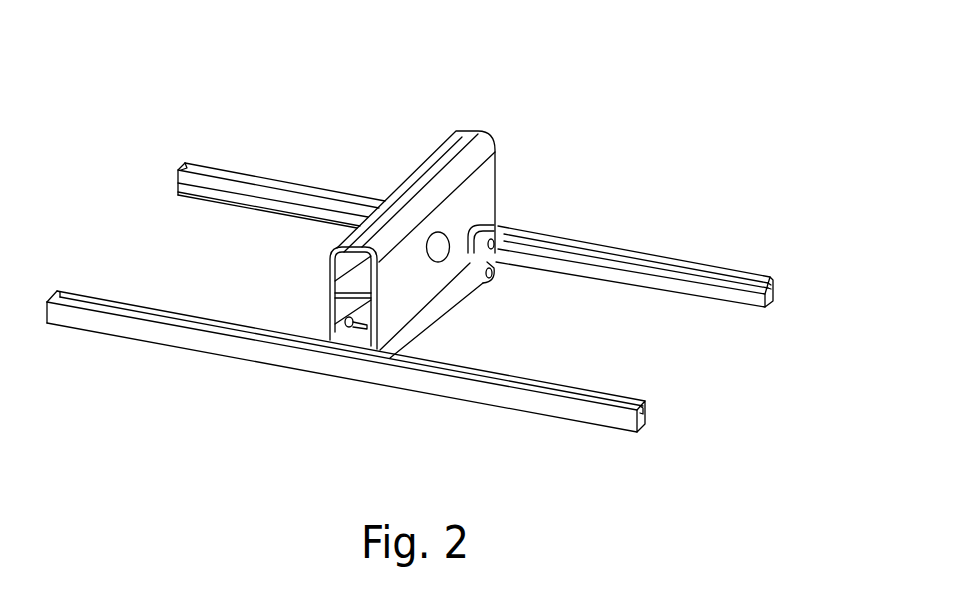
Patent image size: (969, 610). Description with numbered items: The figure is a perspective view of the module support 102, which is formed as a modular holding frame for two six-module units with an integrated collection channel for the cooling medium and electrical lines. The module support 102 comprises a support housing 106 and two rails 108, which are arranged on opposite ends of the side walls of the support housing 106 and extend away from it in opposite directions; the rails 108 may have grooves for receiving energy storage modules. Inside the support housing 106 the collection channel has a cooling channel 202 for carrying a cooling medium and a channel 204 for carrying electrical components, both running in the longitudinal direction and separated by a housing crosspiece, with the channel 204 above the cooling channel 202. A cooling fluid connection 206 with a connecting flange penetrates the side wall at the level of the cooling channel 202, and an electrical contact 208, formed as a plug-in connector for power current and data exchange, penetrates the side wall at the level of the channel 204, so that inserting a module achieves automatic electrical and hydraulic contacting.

The module support 102 is at (231, 87).
The support housing 106 is at (480, 133).
The rail 108 is at (722, 299).
The cooling channel 202 is at (341, 350).
The channel for carrying electrical components 204 is at (342, 271).
The cooling fluid connection 206 is at (502, 270).
The electrical contact 208 is at (462, 213).